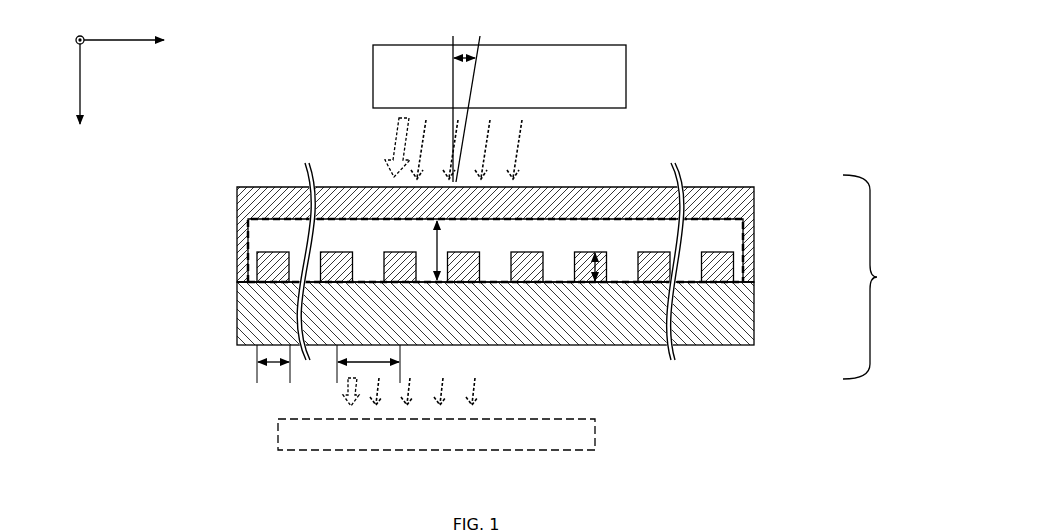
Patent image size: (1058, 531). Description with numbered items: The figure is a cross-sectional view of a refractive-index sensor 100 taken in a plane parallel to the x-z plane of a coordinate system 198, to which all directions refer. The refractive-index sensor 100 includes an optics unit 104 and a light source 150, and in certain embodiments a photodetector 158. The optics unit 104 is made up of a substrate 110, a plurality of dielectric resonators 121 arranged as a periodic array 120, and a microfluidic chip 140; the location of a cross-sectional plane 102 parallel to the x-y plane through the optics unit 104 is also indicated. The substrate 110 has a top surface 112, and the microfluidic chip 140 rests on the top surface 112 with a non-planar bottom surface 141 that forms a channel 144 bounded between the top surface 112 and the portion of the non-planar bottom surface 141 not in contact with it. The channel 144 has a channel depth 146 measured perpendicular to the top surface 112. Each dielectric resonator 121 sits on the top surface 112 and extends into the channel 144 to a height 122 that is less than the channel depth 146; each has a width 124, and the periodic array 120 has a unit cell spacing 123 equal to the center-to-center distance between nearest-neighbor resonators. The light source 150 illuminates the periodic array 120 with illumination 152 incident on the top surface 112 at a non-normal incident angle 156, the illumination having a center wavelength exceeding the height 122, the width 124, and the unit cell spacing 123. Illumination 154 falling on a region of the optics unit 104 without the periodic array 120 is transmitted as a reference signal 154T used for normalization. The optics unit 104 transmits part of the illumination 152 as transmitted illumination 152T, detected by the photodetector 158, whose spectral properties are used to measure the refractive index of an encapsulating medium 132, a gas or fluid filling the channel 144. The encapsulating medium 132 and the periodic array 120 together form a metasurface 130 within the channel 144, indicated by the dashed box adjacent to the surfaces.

The refractive-index sensor 100 is at (841, 66).
The cross-sectional plane 102 is at (237, 262).
The optics unit 104 is at (883, 277).
The substrate 110 is at (552, 324).
The top surface 112 is at (365, 280).
The periodic array 120 is at (246, 273).
The dielectric resonator 121 is at (268, 251).
The height 122 is at (595, 282).
The unit cell spacing 123 is at (400, 362).
The width 124 is at (257, 362).
The metasurface 130 is at (727, 228).
The encapsulating medium 132 is at (630, 247).
The microfluidic chip 140 is at (672, 214).
The non-planar bottom surface 141 is at (487, 225).
The channel 144 is at (625, 268).
The channel depth 146 is at (436, 237).
The light source 150 is at (591, 100).
The illumination 152 is at (535, 151).
The transmitted illumination 152T is at (493, 393).
The illumination 154 is at (393, 140).
The reference signal 154T is at (341, 396).
The non-normal incident angle 156 is at (466, 56).
The photodetector 158 is at (512, 444).
The coordinate system 198 is at (208, 52).